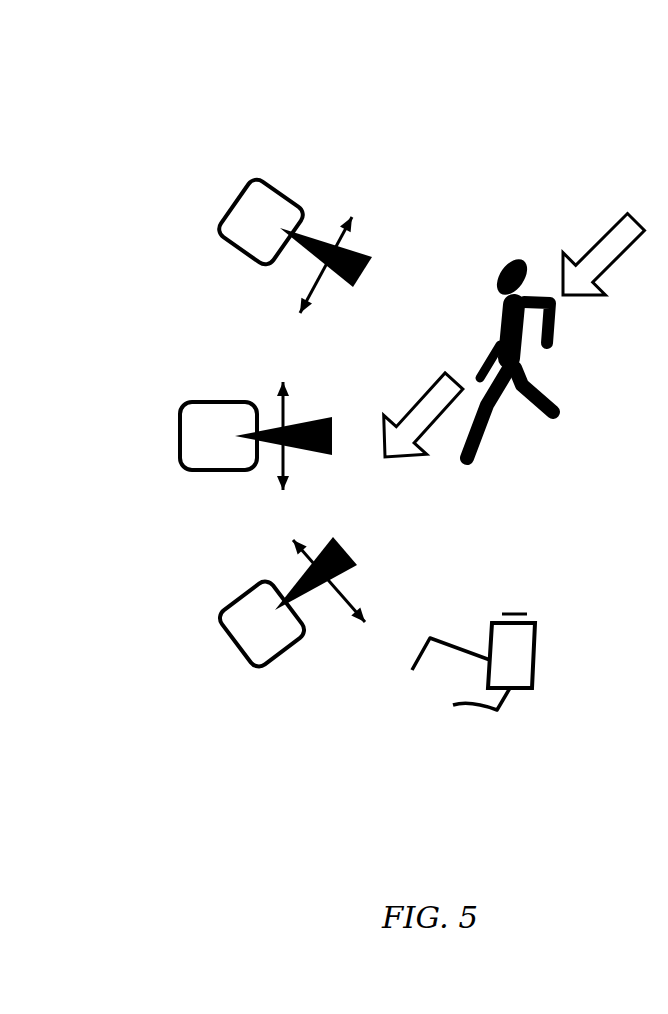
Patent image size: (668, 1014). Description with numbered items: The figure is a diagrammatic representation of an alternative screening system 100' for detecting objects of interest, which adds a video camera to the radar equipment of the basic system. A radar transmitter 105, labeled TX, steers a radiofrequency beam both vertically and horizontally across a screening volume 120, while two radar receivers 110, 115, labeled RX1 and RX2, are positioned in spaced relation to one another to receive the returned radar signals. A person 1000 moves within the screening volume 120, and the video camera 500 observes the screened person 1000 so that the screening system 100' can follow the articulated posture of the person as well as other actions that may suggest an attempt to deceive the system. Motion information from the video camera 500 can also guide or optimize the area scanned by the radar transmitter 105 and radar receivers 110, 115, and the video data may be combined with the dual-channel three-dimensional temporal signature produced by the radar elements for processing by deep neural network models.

The alternative screening system 100' is at (66, 48).
The radar transmitter 105 is at (212, 402).
The radar receiver 110 is at (259, 176).
The radar receiver 115 is at (272, 668).
The screening volume 120 is at (557, 505).
The person 1000 is at (508, 262).
The video camera 500 is at (535, 660).